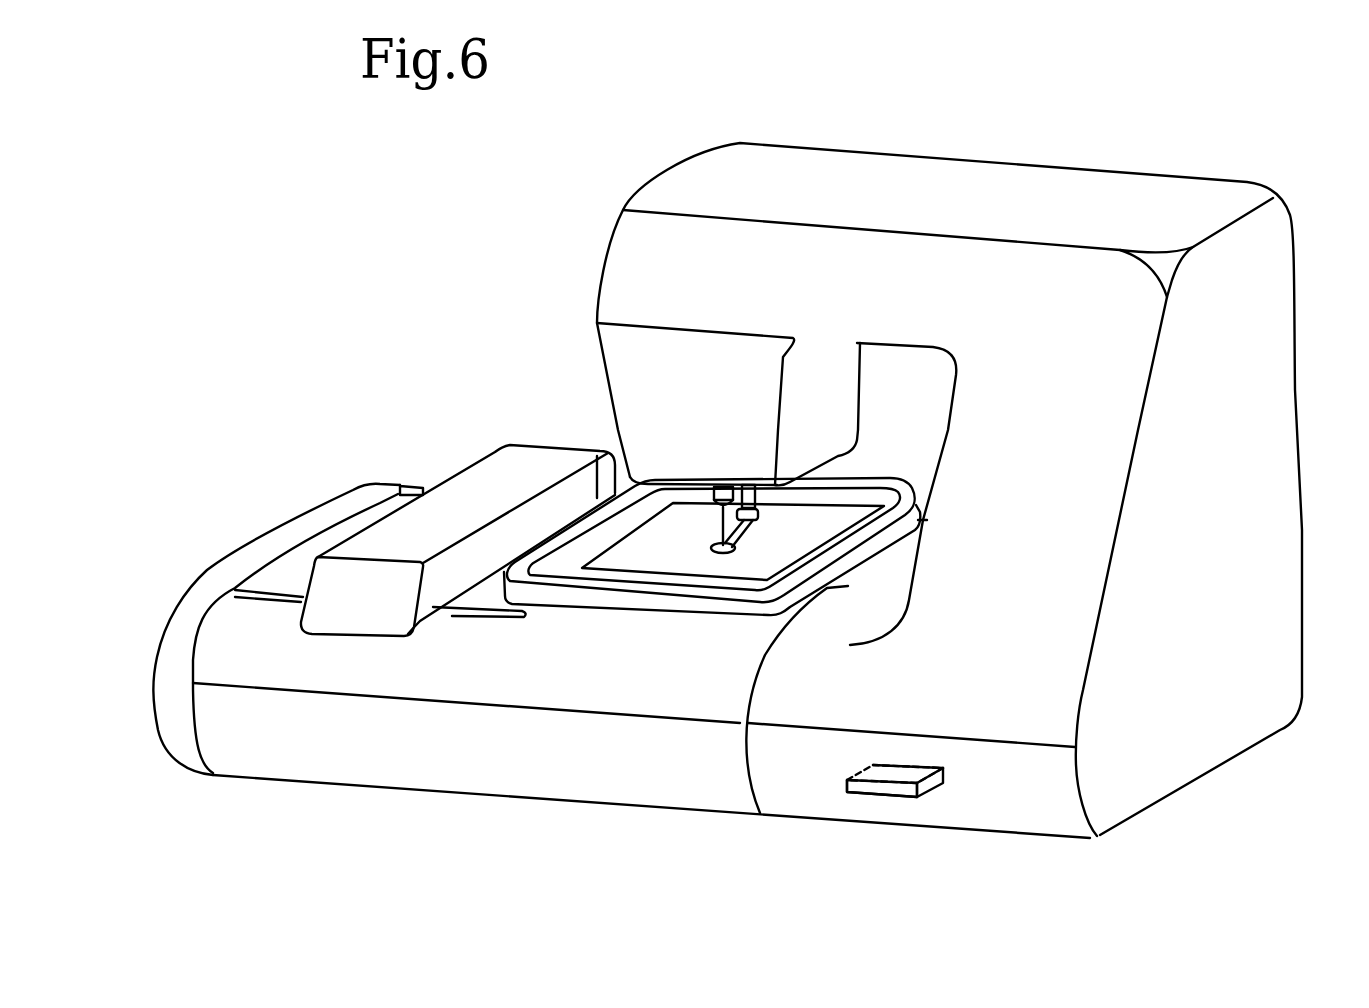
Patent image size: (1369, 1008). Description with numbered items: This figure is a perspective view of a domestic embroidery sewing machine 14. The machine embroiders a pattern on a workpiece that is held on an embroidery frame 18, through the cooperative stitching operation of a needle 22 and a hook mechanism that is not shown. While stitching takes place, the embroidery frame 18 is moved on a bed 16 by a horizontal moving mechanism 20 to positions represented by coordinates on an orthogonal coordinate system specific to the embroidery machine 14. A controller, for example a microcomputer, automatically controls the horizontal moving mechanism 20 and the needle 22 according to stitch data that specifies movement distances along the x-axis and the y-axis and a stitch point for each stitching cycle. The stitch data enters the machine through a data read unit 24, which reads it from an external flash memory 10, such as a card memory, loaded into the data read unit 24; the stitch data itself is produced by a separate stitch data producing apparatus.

The external flash memory 10 is at (875, 782).
The domestic embroidery sewing machine 14 is at (403, 276).
The bed 16 is at (347, 512).
The embroidery frame 18 is at (612, 597).
The horizontal moving mechanism 20 is at (438, 447).
The needle 22 is at (723, 517).
The data read unit 24 is at (945, 772).